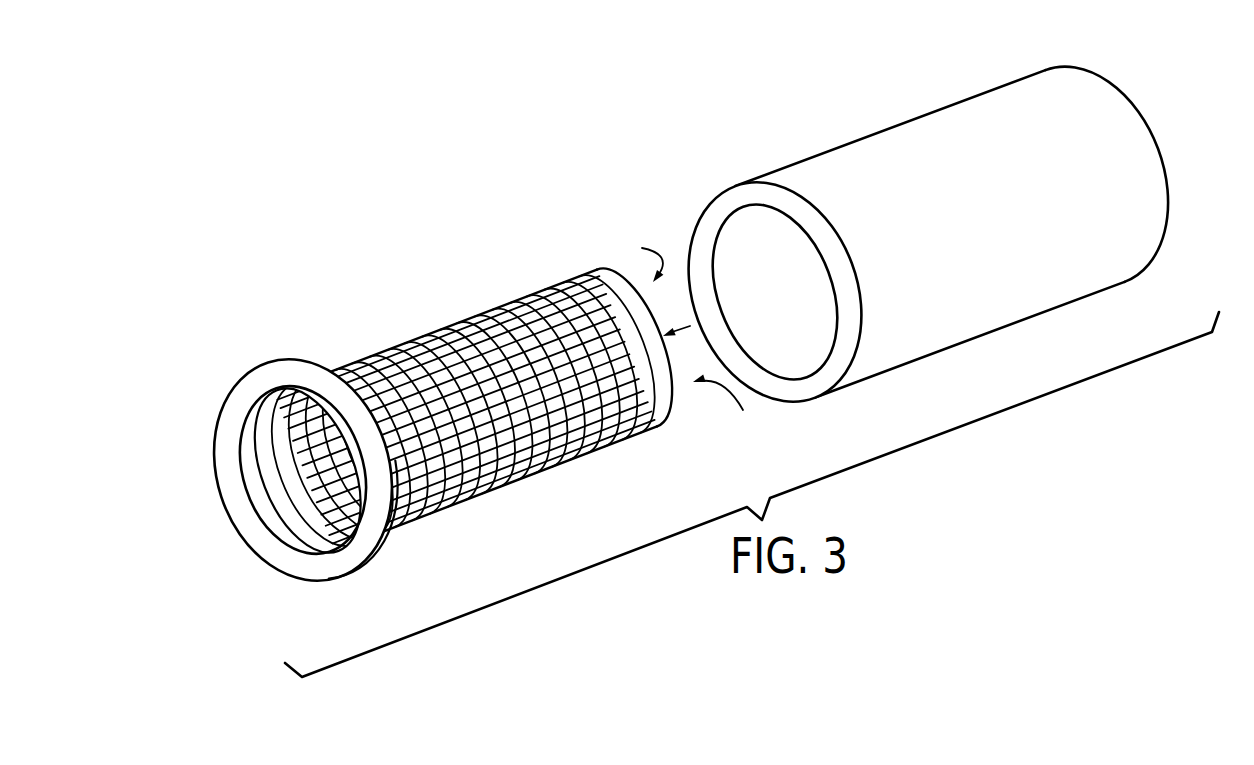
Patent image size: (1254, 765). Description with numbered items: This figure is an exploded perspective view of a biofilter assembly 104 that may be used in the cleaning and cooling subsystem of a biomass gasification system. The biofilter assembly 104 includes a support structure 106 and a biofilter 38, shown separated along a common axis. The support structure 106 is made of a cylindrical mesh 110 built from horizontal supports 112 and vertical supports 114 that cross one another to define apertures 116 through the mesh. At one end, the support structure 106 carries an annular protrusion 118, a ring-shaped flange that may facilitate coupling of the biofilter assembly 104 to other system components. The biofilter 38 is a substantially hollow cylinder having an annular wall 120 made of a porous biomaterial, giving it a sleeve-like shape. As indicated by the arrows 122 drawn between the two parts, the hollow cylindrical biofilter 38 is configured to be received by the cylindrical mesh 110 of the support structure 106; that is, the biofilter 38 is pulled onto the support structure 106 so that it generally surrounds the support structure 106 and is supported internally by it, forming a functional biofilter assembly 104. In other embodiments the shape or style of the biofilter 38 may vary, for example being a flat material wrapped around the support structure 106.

The biofilter 38 is at (914, 226).
The biofilter assembly 104 is at (438, 348).
The support structure 106 is at (465, 358).
The cylindrical mesh 110 is at (557, 280).
The horizontal supports 112 is at (478, 312).
The vertical supports 114 is at (368, 380).
The apertures 116 is at (519, 294).
The annular protrusion 118 is at (277, 363).
The annular wall 120 is at (712, 227).
The arrows 122 is at (682, 338).